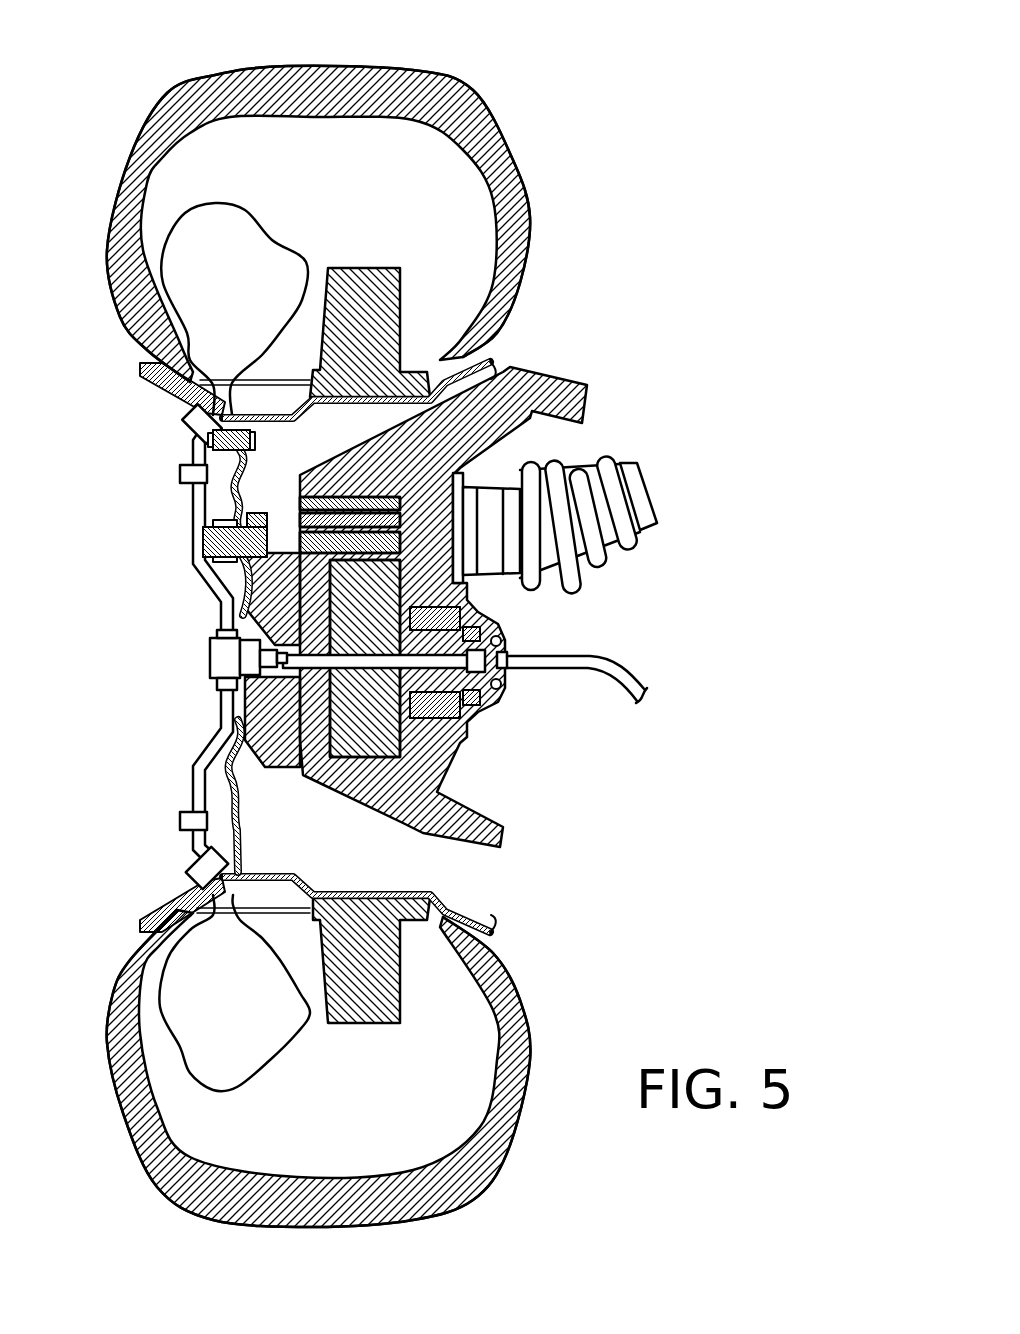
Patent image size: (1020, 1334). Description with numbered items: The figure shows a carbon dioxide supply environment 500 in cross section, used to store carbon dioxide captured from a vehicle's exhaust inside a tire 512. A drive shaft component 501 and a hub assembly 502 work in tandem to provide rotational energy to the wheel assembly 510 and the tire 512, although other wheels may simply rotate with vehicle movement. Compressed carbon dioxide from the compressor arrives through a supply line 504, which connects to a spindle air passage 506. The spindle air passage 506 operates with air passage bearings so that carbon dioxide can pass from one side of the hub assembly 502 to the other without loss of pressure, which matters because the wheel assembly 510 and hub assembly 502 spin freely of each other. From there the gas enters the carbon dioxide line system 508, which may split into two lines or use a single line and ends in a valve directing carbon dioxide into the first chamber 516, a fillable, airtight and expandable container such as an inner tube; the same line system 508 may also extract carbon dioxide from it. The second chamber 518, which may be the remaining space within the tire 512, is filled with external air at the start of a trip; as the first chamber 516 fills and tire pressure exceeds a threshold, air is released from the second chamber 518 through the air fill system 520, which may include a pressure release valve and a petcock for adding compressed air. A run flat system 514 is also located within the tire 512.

The carbon dioxide supply environment 500 is at (738, 88).
The drive shaft component 501 is at (648, 493).
The hub assembly 502 is at (547, 383).
The supply line 504 is at (603, 666).
The spindle air passage 506 is at (420, 663).
The carbon dioxide line system 508 is at (217, 656).
The wheel assembly 510 is at (152, 376).
The tire 512 is at (130, 160).
The run flat system 514 is at (357, 278).
The first chamber 516 is at (243, 232).
The second chamber 518 is at (463, 198).
The air fill system 520 is at (255, 441).